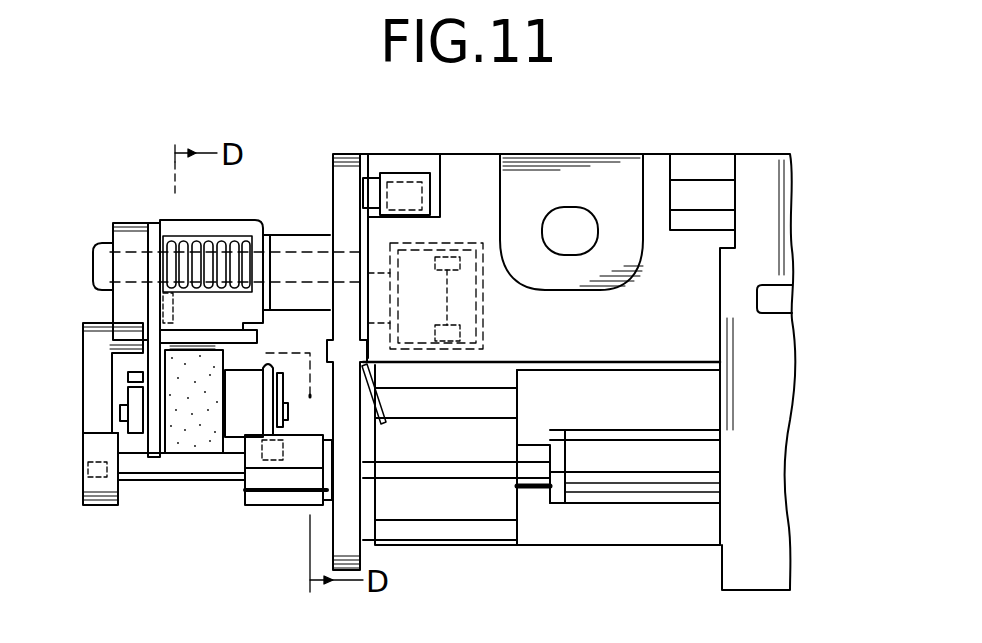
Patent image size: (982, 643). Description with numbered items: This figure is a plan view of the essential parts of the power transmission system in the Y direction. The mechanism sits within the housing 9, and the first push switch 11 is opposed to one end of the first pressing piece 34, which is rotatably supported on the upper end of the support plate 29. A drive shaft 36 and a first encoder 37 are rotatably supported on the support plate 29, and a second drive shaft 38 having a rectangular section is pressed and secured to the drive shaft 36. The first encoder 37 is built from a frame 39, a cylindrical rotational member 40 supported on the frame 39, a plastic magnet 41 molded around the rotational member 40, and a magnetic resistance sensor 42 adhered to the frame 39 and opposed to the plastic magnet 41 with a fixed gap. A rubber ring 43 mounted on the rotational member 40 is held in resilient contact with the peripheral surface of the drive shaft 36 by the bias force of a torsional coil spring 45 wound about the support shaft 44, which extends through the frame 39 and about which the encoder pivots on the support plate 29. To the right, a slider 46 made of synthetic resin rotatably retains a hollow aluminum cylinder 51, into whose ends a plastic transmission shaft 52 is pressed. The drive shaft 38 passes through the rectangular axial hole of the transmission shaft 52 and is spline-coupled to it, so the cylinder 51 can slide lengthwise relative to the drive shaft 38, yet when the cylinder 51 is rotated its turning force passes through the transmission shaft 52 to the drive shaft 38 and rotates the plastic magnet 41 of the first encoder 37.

The housing 9 is at (652, 153).
The first push switch 11 is at (443, 243).
The support plate 29 is at (92, 363).
The first pressing piece 34 is at (383, 404).
The drive shaft 36 is at (300, 500).
The first encoder 37 is at (133, 375).
The drive shaft 38 is at (490, 470).
The frame 39 is at (150, 338).
The rotational member 40 is at (240, 407).
The plastic magnet 41 is at (187, 445).
The magnetic resistance sensor 42 is at (227, 333).
The rubber ring 43 is at (270, 407).
The support shaft 44 is at (97, 247).
The torsional coil spring 45 is at (222, 240).
The slider 46 is at (637, 530).
The cylinder 51 is at (688, 490).
The transmission shaft 52 is at (564, 490).